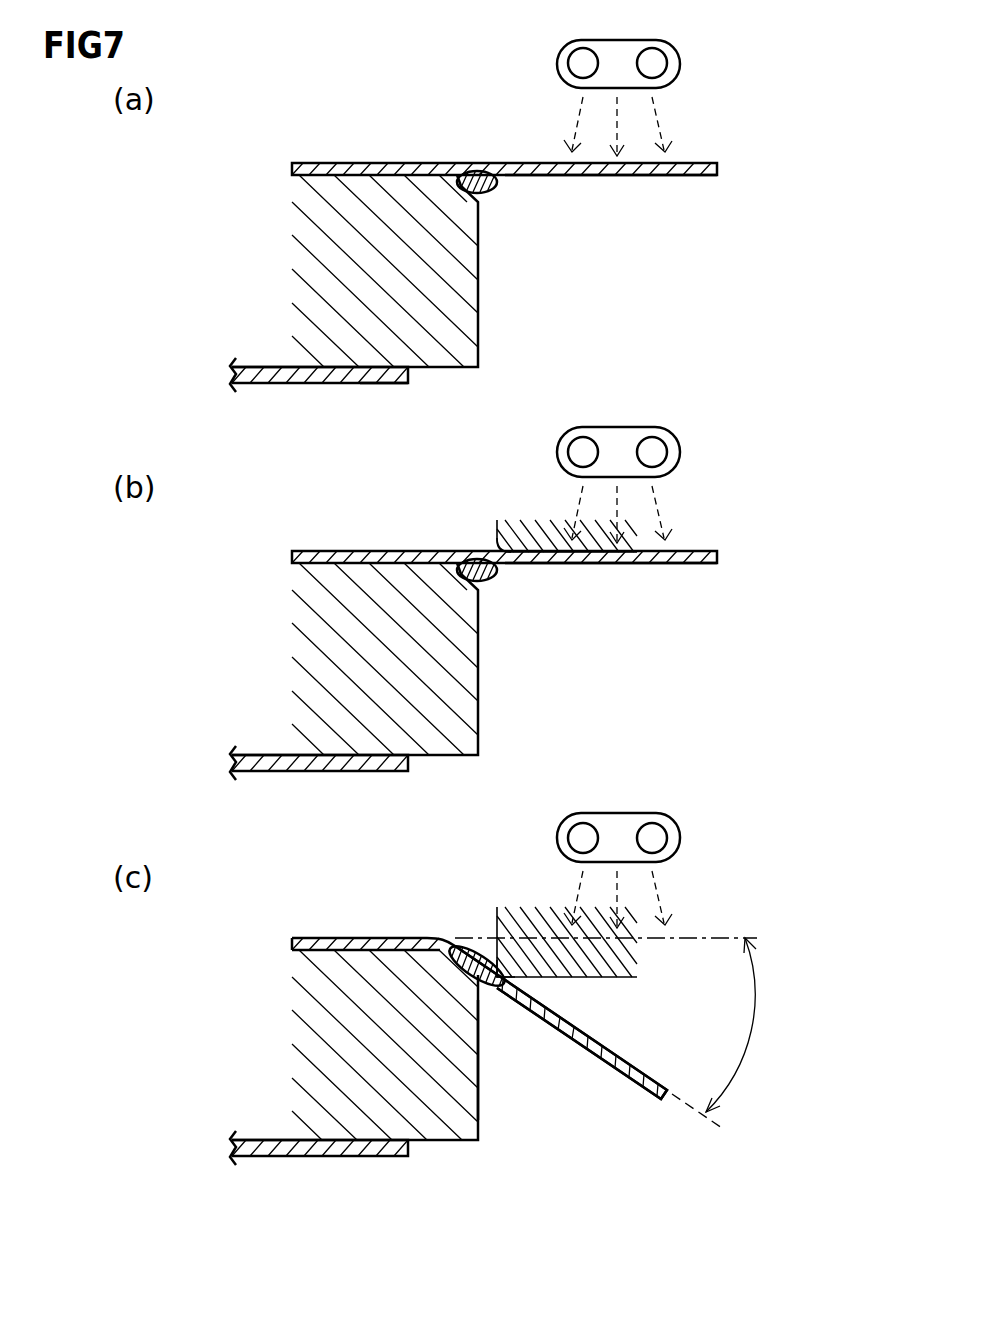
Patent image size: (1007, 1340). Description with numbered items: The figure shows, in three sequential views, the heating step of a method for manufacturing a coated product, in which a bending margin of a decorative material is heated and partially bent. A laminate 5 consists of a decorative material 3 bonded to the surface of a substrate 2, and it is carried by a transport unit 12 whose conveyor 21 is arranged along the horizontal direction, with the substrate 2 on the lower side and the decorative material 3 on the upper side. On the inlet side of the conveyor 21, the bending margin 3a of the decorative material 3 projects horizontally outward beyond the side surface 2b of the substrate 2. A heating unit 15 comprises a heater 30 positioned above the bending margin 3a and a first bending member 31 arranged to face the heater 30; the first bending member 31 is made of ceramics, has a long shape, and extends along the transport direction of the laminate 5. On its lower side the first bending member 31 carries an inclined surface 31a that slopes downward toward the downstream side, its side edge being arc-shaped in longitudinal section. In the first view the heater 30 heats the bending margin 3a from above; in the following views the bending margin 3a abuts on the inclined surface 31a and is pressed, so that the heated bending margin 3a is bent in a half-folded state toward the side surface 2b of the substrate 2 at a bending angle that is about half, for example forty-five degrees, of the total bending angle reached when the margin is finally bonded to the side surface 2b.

The substrate 2 is at (307, 208).
The side surface of the substrate 2b is at (480, 1065).
The decorative material 3 is at (375, 163).
The bending margin 3a is at (716, 163).
The laminate 5 is at (272, 259).
The transport unit 12 is at (386, 400).
The heating unit 15 is at (705, 80).
The conveyor 21 is at (312, 384).
The heater 30 is at (540, 70).
The first bending member 31 is at (497, 526).
The inclined surface 31a is at (500, 550).